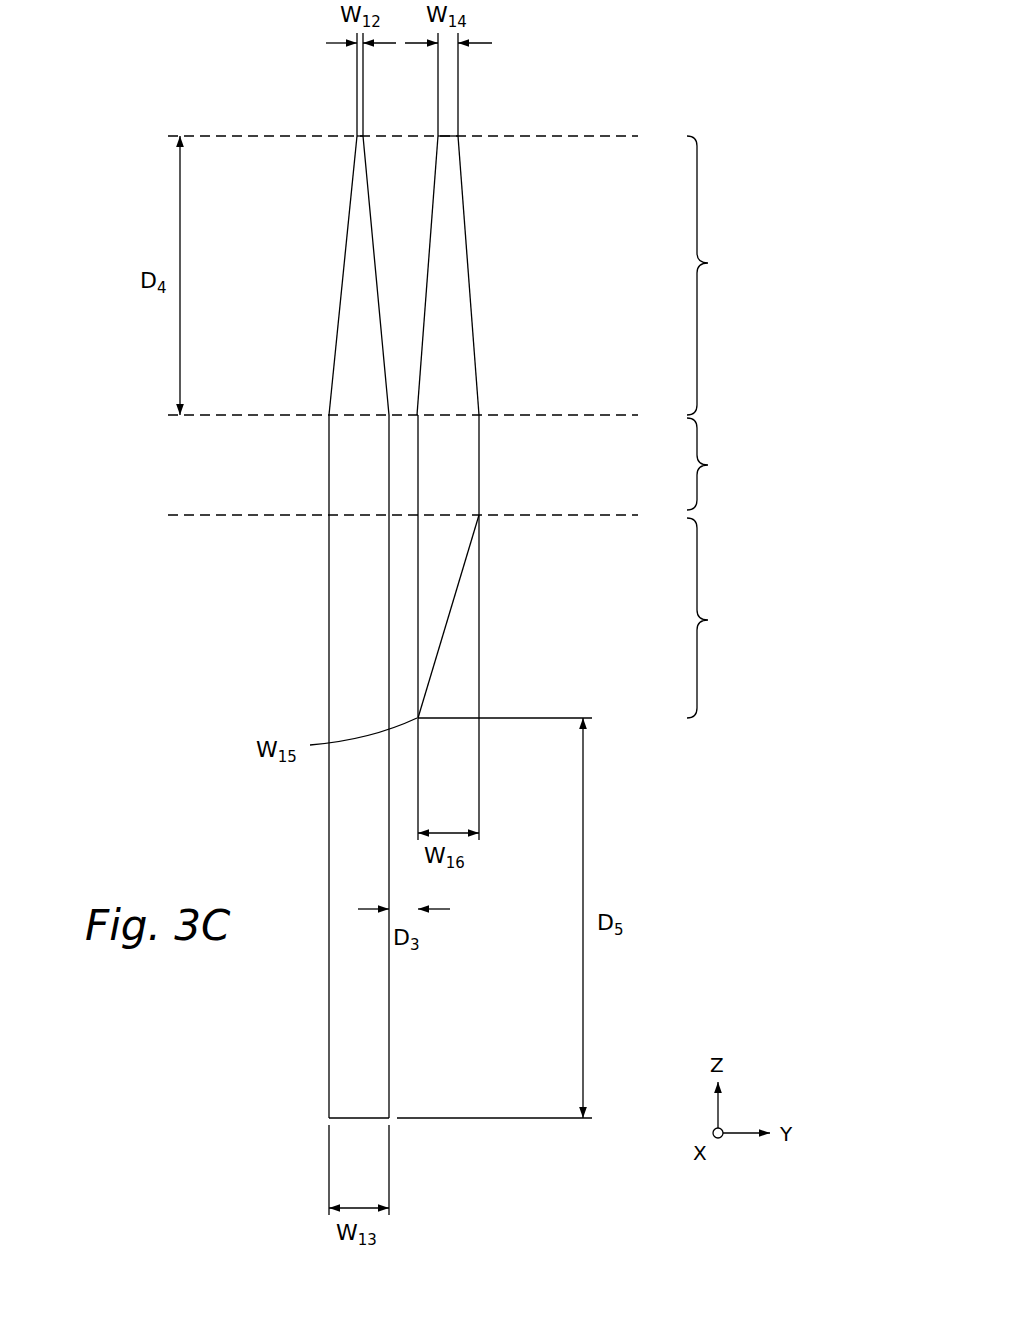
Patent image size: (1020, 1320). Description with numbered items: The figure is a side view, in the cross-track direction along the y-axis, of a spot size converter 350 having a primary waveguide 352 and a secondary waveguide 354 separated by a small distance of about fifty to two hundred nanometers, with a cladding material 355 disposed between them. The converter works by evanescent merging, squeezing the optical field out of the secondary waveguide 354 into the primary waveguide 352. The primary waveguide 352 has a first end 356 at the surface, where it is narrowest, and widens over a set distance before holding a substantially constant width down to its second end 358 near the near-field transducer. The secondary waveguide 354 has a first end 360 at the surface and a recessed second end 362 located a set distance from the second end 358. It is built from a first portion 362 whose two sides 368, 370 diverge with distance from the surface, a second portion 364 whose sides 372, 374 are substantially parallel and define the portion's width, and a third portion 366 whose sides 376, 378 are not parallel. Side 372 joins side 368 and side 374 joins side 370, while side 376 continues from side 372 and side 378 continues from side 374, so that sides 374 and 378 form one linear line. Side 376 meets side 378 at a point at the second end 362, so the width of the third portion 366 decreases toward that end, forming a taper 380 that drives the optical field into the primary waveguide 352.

The spot size converter 350 is at (616, 135).
The primary waveguide 352 is at (325, 631).
The secondary waveguide 354 is at (423, 463).
The cladding material 355 is at (402, 459).
The first end of primary waveguide 356 is at (358, 134).
The second end of primary waveguide 358 is at (363, 1124).
The first end of secondary waveguide 360 is at (456, 134).
The first portion / second end of secondary waveguide 362 is at (443, 748).
The second portion of secondary waveguide 364 is at (719, 464).
The third portion of secondary waveguide 366 is at (719, 618).
The side of first portion 368 is at (470, 220).
The side of first portion 370 is at (428, 220).
The side of second portion 372 is at (480, 463).
The side of second portion 374 is at (417, 497).
The side of third portion 376 is at (456, 588).
The side of third portion 378 is at (417, 610).
The taper 380 is at (496, 655).